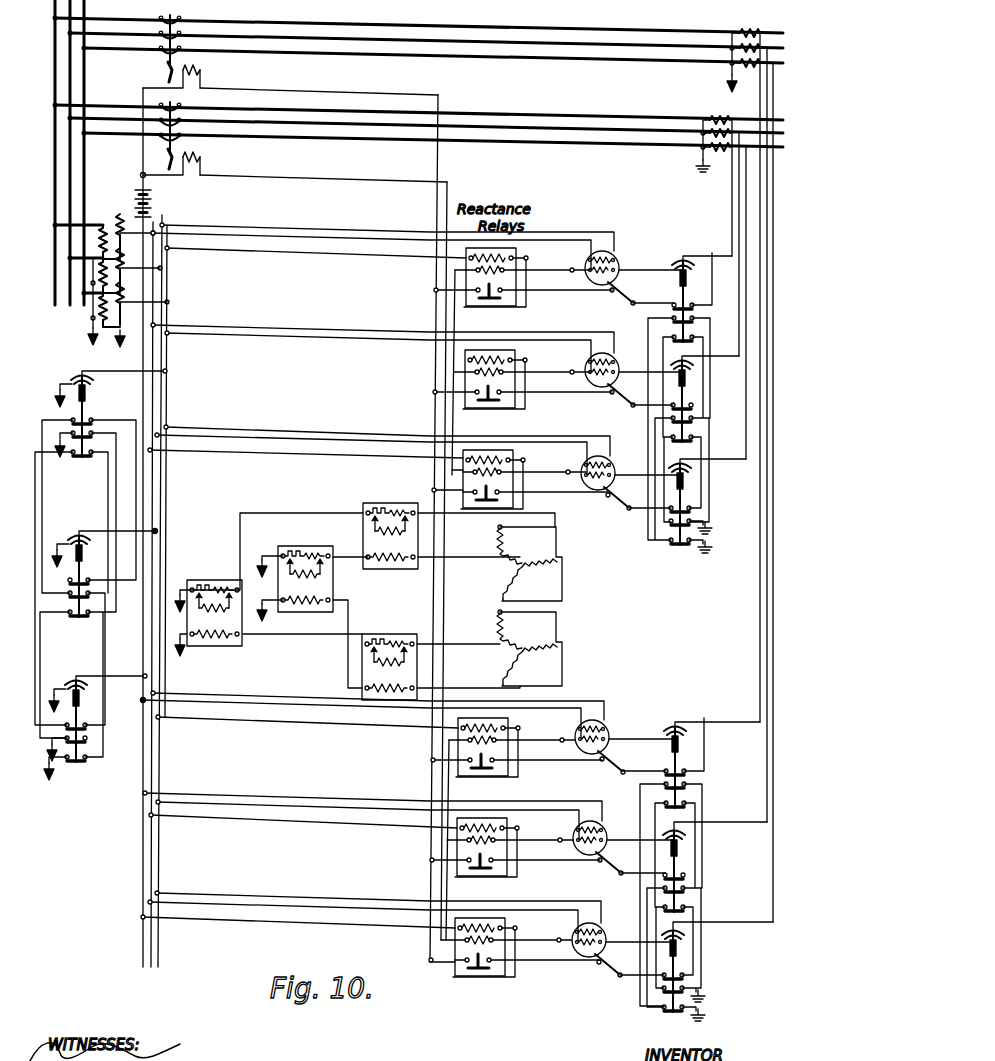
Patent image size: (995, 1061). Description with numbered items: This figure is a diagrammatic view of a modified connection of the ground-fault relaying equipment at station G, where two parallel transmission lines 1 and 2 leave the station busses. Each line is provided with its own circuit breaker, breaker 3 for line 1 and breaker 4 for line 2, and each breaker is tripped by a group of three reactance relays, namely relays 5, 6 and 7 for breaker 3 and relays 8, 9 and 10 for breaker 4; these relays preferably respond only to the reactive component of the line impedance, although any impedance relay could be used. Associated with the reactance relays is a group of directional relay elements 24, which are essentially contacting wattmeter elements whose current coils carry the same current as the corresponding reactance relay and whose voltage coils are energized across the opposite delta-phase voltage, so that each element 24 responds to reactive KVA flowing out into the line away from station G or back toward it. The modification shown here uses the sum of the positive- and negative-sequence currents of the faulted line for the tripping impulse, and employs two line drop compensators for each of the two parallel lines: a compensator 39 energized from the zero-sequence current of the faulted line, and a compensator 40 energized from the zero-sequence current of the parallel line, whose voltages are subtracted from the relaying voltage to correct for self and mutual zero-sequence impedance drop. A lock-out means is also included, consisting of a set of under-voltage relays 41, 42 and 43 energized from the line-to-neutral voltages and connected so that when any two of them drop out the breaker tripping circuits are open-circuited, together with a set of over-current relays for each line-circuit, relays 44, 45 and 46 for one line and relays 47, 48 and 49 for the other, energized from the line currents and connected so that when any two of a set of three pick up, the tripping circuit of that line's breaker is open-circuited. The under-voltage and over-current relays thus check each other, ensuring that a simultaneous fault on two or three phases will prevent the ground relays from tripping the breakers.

The line 1 is at (611, 130).
The line 2 is at (626, 52).
The circuit breaker 3 is at (167, 145).
The circuit breaker 4 is at (166, 58).
The reactance relay 5 is at (486, 509).
The reactance relay 6 is at (485, 408).
The reactance relay 7 is at (486, 307).
The reactance relay 8 is at (482, 980).
The reactance relay 9 is at (484, 876).
The reactance relay 10 is at (490, 776).
The directional relay element 24 is at (615, 262).
The compensator 39 is at (392, 506).
The compensator 40 is at (220, 582).
The under-voltage relay 41 is at (94, 728).
The under-voltage relay 42 is at (103, 574).
The under-voltage relay 43 is at (110, 414).
The over-current relay 44 is at (707, 502).
The over-current relay 45 is at (705, 399).
The over-current relay 46 is at (702, 299).
The over-current relay 47 is at (717, 967).
The over-current relay 48 is at (715, 867).
The over-current relay 49 is at (712, 765).
The station G is at (509, 89).